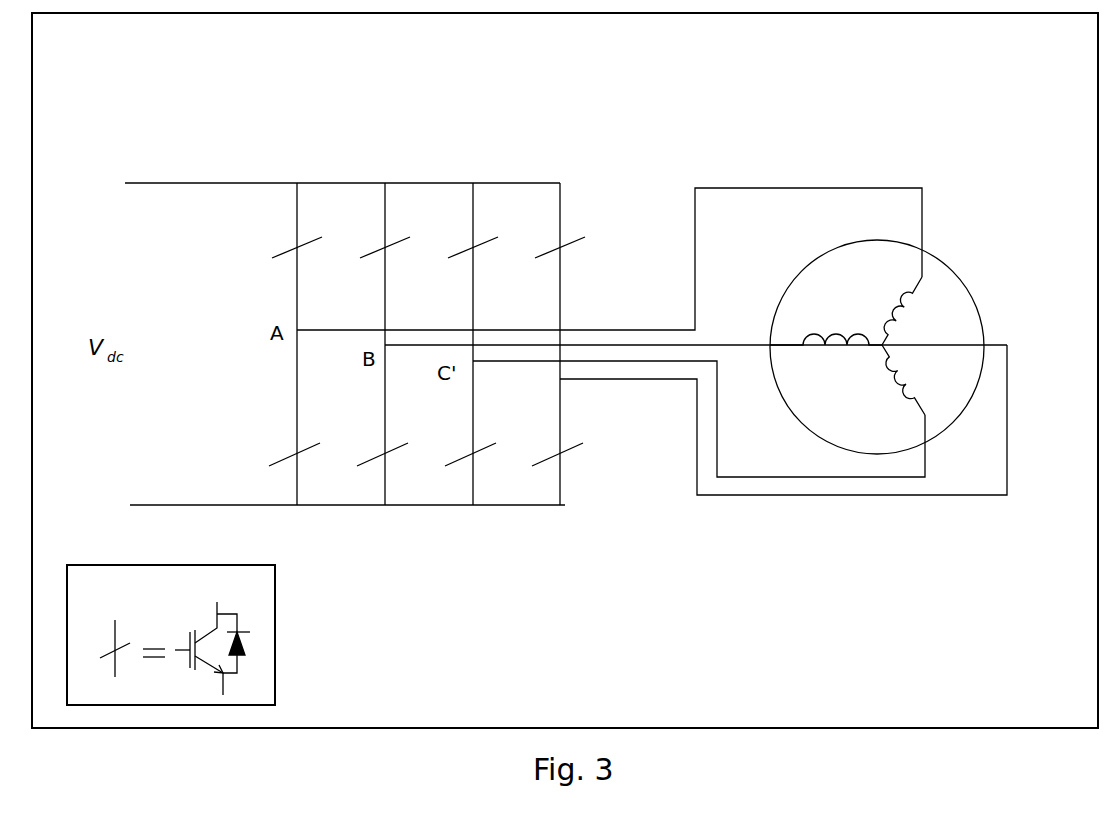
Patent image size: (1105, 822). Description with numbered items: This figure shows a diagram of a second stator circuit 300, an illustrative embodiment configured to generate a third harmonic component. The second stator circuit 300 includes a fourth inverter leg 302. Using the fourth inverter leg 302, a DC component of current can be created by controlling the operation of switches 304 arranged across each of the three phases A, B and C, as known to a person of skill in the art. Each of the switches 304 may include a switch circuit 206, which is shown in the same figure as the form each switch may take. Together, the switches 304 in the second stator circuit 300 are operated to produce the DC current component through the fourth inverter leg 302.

The second stator circuit 300 is at (1060, 707).
The switches 304 is at (282, 252).
The fourth inverter leg 302 is at (880, 495).
The switch circuit 206 is at (128, 600).